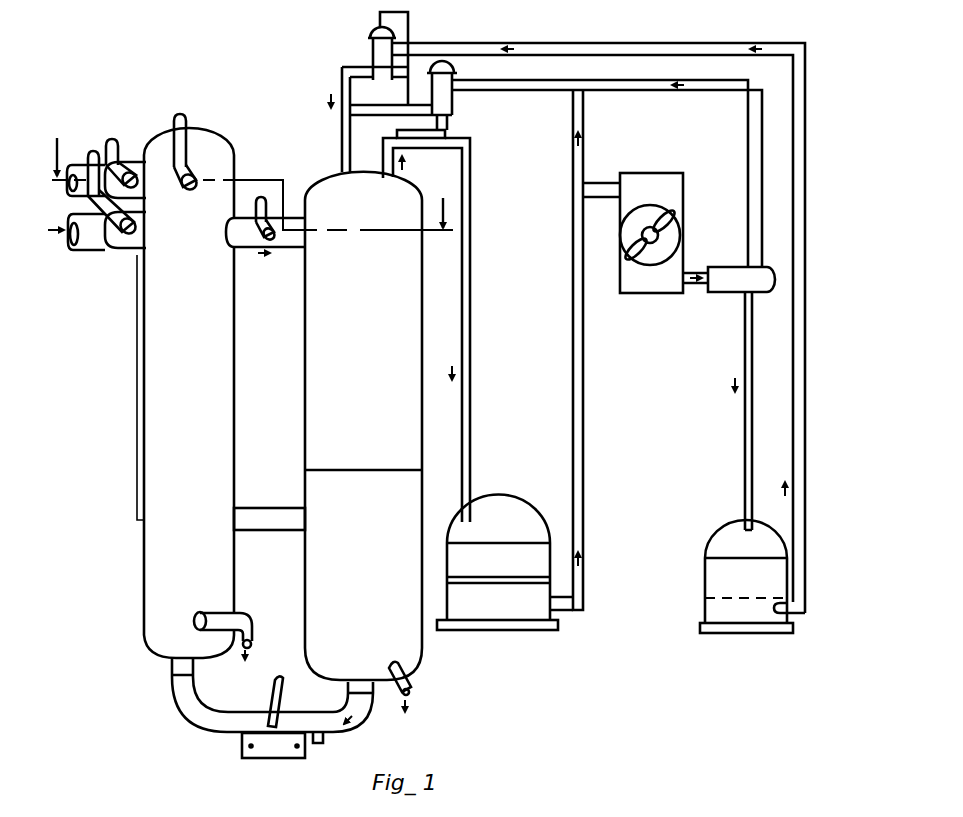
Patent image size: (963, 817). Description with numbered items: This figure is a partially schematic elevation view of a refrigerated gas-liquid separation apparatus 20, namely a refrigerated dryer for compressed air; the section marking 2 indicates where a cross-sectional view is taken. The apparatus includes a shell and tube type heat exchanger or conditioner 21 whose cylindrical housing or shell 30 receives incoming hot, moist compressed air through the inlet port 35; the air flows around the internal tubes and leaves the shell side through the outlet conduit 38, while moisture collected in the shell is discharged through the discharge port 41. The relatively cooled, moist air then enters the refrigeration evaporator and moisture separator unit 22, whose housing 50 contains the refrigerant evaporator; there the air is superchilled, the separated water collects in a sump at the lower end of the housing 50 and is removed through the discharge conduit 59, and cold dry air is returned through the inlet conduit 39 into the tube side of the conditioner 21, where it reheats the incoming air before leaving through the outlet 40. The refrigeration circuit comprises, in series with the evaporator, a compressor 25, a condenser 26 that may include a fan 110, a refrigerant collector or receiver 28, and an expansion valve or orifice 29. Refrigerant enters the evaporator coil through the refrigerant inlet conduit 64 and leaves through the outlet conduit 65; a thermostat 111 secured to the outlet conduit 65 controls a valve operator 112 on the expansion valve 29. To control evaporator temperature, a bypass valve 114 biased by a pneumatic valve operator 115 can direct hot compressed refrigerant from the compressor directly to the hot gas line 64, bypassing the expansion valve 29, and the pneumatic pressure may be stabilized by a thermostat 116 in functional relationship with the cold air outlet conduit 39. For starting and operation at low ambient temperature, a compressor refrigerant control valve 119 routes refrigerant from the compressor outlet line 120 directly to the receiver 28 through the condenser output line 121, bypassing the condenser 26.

The section line 2- 2 is at (251, 169).
The refrigerated gas-liquid separation apparatus 20 is at (113, 483).
The shell and tube type heat exchanger or conditioner 21 is at (138, 573).
The refrigeration evaporator and moisture separator unit 22 is at (324, 319).
The compressor 25 is at (528, 465).
The condenser 26 is at (675, 190).
The refrigerant collector or receiver 28 is at (707, 573).
The expansion valve or orifice 29 is at (372, 55).
The cylindrical housing or shell 30 is at (204, 392).
The inlet port 35 is at (88, 250).
The outlet conduit 38 is at (243, 236).
The inlet conduit 39 is at (190, 712).
The outlet 40 is at (75, 163).
The discharge port 41 is at (246, 640).
The housing 50 is at (382, 394).
The discharge conduit 59 is at (408, 688).
The refrigerant inlet conduit 64 is at (342, 138).
The outlet conduit 65 is at (383, 160).
The fan 110 is at (650, 205).
The thermostat 111 is at (447, 131).
The valve operator 112 is at (380, 35).
The bypass valve 114 is at (450, 100).
The pneumatic valve operator 115 is at (445, 64).
The thermostat 116 is at (326, 745).
The compressor refrigerant control valve 119 is at (729, 265).
The compressor outlet line 120 is at (583, 392).
The condenser output line 121 is at (746, 452).